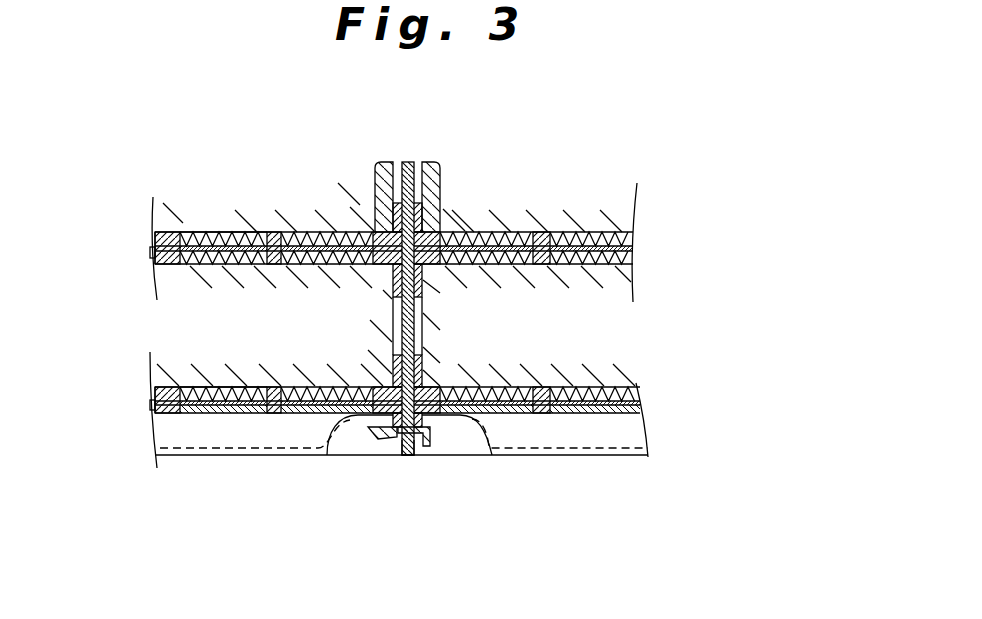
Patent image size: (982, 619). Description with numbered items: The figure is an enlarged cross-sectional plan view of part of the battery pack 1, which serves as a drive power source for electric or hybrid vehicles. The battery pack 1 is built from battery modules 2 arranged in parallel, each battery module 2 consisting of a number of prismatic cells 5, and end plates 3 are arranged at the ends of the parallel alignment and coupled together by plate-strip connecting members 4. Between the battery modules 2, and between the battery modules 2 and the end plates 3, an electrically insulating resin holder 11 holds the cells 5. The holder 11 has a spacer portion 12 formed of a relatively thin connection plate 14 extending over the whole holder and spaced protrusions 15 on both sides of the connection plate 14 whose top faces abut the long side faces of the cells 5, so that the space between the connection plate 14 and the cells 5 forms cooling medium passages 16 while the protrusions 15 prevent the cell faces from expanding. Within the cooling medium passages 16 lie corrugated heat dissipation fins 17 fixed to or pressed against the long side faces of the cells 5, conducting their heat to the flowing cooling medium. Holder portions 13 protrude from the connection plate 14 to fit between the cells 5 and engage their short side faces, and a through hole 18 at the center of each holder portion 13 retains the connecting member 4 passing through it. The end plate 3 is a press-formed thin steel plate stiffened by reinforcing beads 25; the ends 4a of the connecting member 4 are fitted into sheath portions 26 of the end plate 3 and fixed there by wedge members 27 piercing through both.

The battery pack 1 is at (652, 460).
The battery module 2 is at (637, 186).
The end plate 3 is at (401, 482).
The connecting member 4 is at (415, 315).
The end of the connecting member 4a is at (408, 457).
The cell 5 is at (243, 199).
The holder 11 is at (400, 320).
The spacer portion 12 is at (147, 254).
The holder portion 13 is at (375, 161).
The connection plate 14 is at (322, 247).
The protrusion 15 is at (273, 246).
The cooling medium passage 16 is at (222, 233).
The heat dissipation fin 17 is at (206, 244).
The through hole 18 is at (430, 166).
The reinforcing bead 25 is at (300, 457).
The sheath portion 26 is at (393, 457).
The wedge member 27 is at (440, 456).